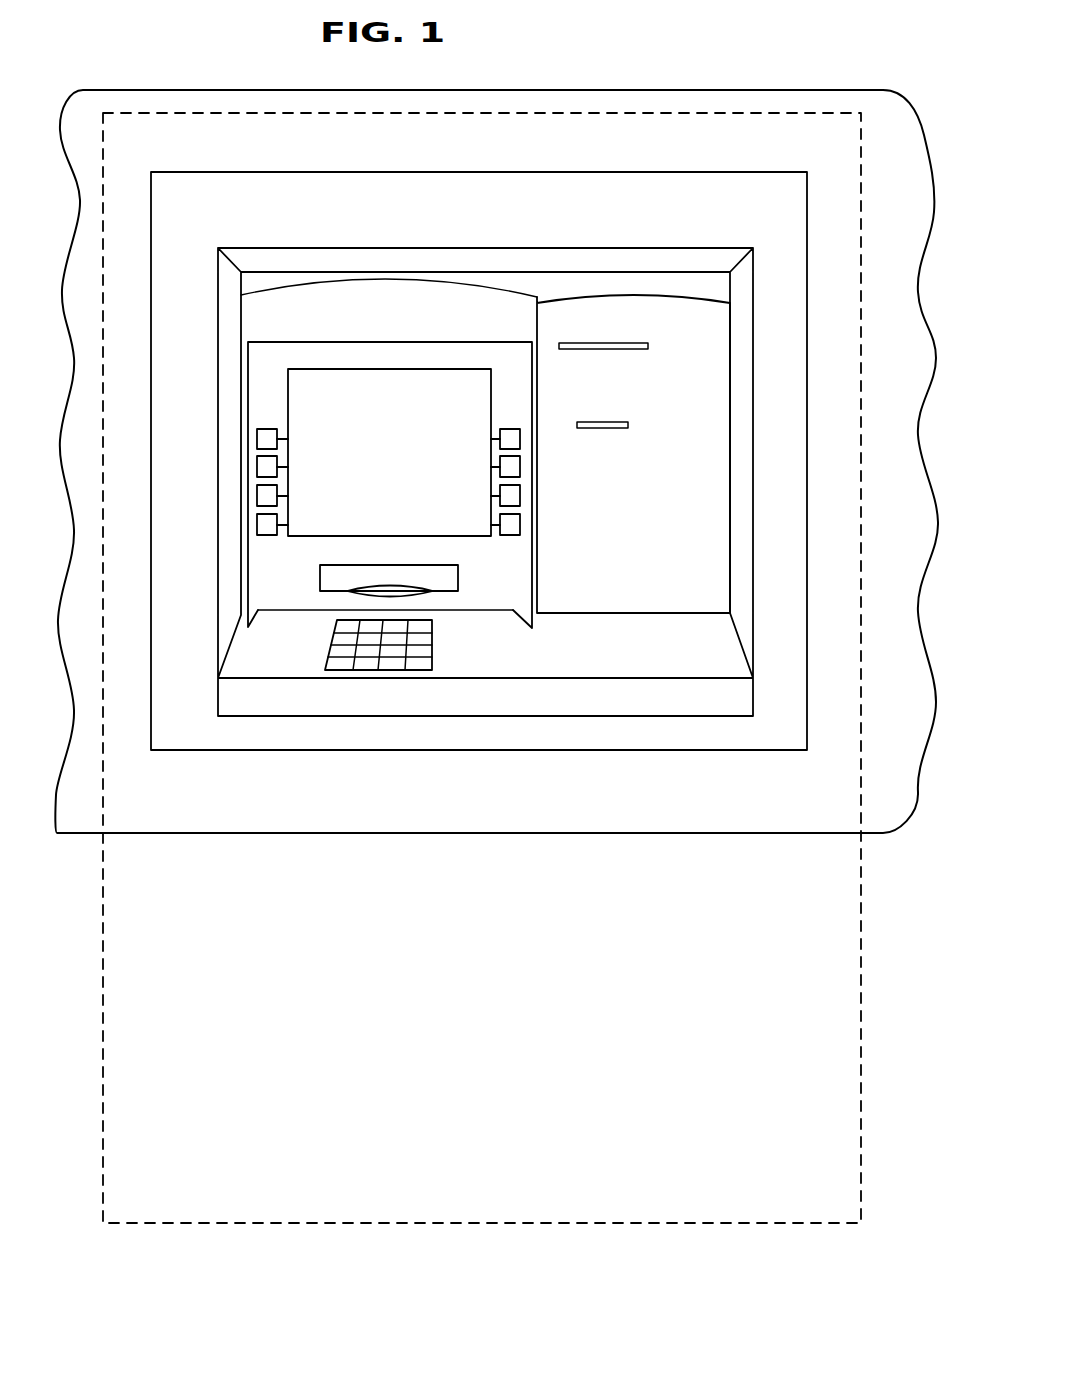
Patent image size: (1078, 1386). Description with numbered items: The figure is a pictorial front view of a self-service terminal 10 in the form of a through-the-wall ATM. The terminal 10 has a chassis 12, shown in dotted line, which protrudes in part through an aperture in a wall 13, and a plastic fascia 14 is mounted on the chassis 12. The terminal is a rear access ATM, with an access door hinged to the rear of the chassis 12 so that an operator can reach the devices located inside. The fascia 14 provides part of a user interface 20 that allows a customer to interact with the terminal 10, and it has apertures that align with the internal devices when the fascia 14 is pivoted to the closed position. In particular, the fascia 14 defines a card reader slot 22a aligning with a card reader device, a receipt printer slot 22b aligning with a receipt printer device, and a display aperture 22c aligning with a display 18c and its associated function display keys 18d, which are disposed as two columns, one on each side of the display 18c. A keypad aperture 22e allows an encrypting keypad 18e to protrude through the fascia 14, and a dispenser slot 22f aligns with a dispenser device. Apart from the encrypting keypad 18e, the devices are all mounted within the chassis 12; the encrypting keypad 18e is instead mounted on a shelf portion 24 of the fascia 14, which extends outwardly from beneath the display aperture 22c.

The self-service terminal 10 is at (710, 766).
The chassis 12 is at (347, 1223).
The wall 13 is at (644, 90).
The fascia 14 is at (675, 190).
The display 18c is at (448, 370).
The function display keys 18d is at (257, 526).
The encrypting keypad 18e is at (325, 664).
The user interface 20 is at (690, 537).
The card reader slot 22a is at (600, 428).
The receipt printer slot 22b is at (602, 349).
The display aperture 22c is at (340, 370).
The keypad aperture 22e is at (432, 661).
The dispenser slot 22f is at (458, 578).
The shelf portion 24 is at (550, 665).